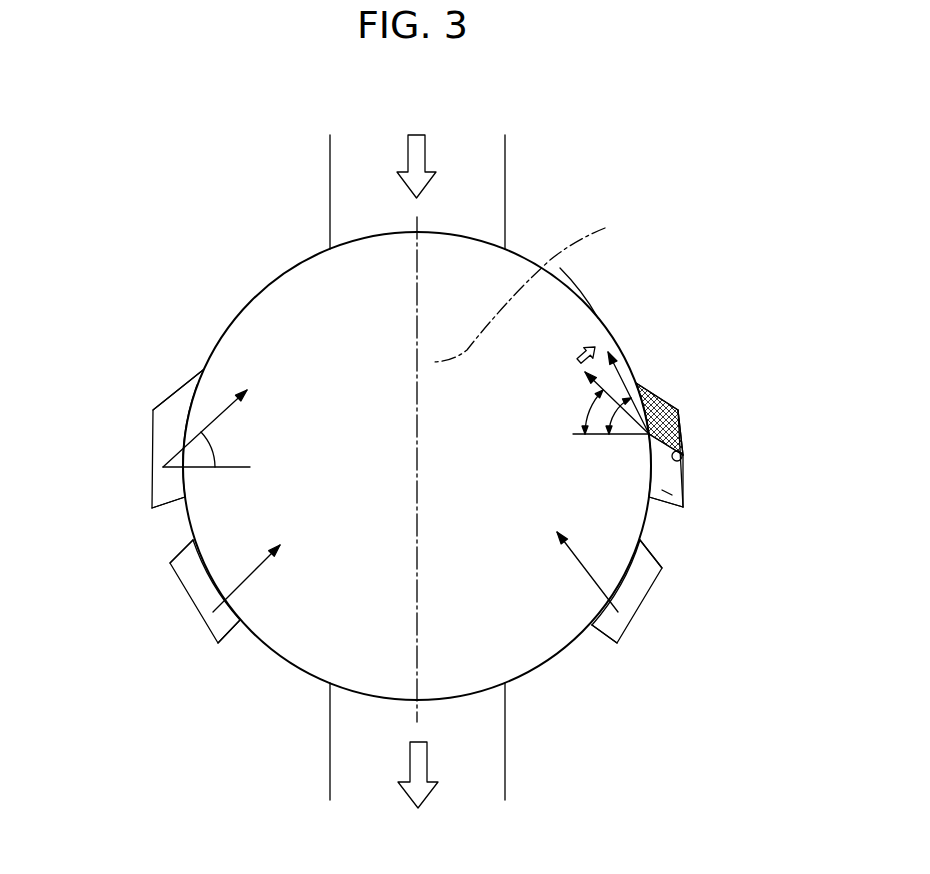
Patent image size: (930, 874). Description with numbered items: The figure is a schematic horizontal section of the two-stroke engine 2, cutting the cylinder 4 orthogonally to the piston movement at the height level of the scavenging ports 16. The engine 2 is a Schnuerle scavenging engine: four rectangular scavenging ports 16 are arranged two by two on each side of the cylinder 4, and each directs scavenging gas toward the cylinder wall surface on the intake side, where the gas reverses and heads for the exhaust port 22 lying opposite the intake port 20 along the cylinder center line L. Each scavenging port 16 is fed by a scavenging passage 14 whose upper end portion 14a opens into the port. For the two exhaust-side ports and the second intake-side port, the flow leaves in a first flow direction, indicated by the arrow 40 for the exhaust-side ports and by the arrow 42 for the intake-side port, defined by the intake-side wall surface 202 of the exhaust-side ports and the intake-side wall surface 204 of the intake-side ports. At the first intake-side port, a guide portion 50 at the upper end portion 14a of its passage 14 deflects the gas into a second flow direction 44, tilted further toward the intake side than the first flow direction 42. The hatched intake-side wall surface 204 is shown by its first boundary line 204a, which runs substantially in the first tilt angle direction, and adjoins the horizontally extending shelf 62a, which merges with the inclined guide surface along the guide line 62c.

The engine 2 is at (727, 190).
The cylinder 4 is at (595, 322).
The scavenging passage 14 is at (722, 446).
The upper end portion of scavenging passage 14a is at (726, 518).
The scavenging port 16 is at (601, 471).
The intake port 20 is at (463, 233).
The exhaust port 22 is at (462, 698).
The arrow indicating flow direction 40 is at (265, 560).
The first flow direction 42 is at (597, 383).
The second flow direction 44 is at (627, 370).
The guide portion 50 is at (697, 438).
The shelf 62a is at (677, 422).
The guide line 62c is at (687, 475).
The intake-side wall surface 202 is at (177, 585).
The intake-side wall surface 204 is at (155, 418).
The first boundary line 204a is at (721, 408).
The cylinder center line L is at (526, 291).